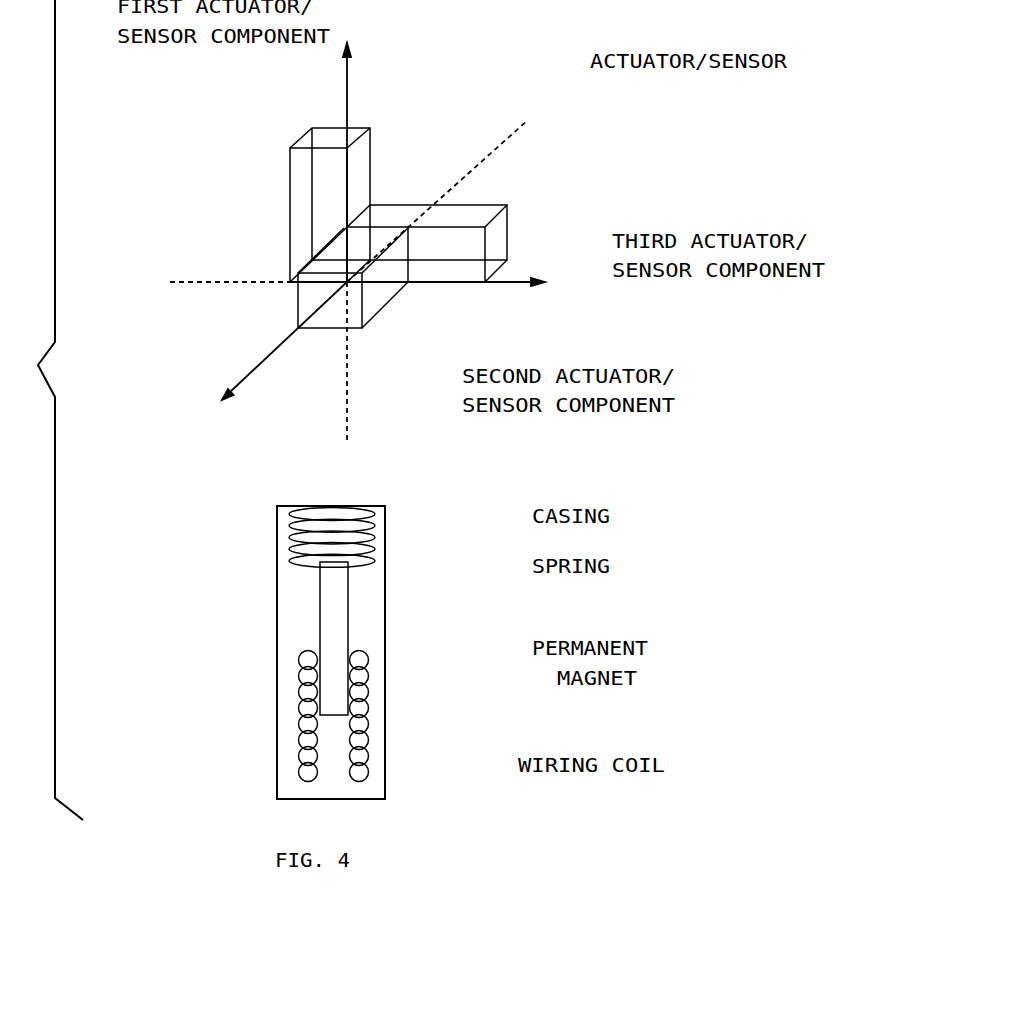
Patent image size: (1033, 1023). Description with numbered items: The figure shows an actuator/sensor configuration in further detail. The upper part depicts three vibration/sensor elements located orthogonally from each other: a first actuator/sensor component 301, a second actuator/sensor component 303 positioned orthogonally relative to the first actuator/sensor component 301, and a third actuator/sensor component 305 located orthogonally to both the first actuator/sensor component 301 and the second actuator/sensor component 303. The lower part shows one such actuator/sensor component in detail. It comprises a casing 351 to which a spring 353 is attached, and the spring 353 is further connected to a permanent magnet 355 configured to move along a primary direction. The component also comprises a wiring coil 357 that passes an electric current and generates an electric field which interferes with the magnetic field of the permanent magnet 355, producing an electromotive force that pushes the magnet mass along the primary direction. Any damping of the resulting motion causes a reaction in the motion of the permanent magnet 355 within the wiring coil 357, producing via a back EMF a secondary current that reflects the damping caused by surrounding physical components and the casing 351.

The first actuator/sensor component 301 is at (247, 50).
The second actuator/sensor component 303 is at (462, 375).
The third actuator/sensor component 305 is at (605, 247).
The casing 351 is at (523, 516).
The spring 353 is at (525, 569).
The permanent magnet 355 is at (332, 617).
The wiring coil 357 is at (359, 725).